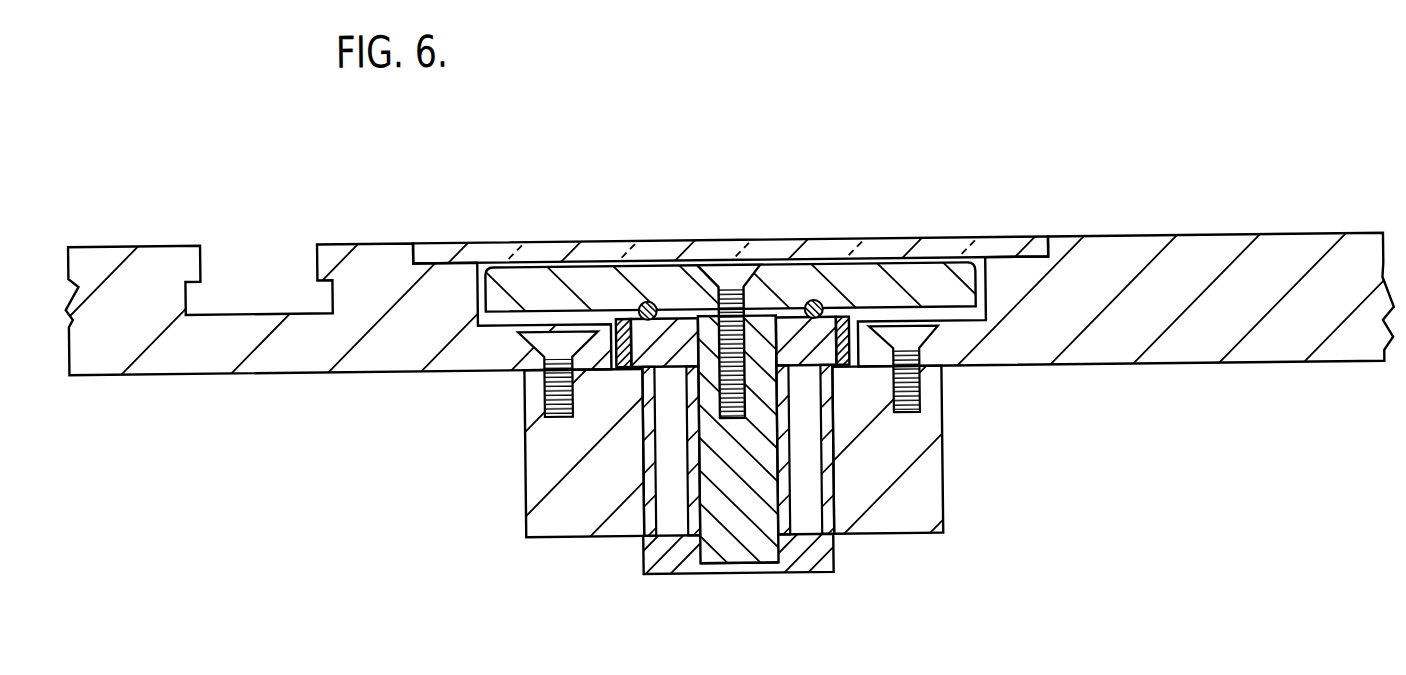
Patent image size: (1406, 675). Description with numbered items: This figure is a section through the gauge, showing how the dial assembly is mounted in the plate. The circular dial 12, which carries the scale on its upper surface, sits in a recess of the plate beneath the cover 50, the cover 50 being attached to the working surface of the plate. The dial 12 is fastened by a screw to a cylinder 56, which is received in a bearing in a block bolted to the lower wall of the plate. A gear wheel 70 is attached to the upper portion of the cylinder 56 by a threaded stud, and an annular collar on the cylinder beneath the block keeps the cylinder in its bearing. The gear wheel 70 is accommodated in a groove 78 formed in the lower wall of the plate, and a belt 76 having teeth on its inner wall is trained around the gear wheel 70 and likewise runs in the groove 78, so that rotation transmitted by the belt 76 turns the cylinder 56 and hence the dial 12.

The circular dial 12 is at (893, 261).
The cover 50 is at (1011, 240).
The cylinder 56 is at (777, 547).
The gear wheel 70 is at (614, 331).
The belt 76 is at (848, 348).
The groove 78 is at (648, 301).